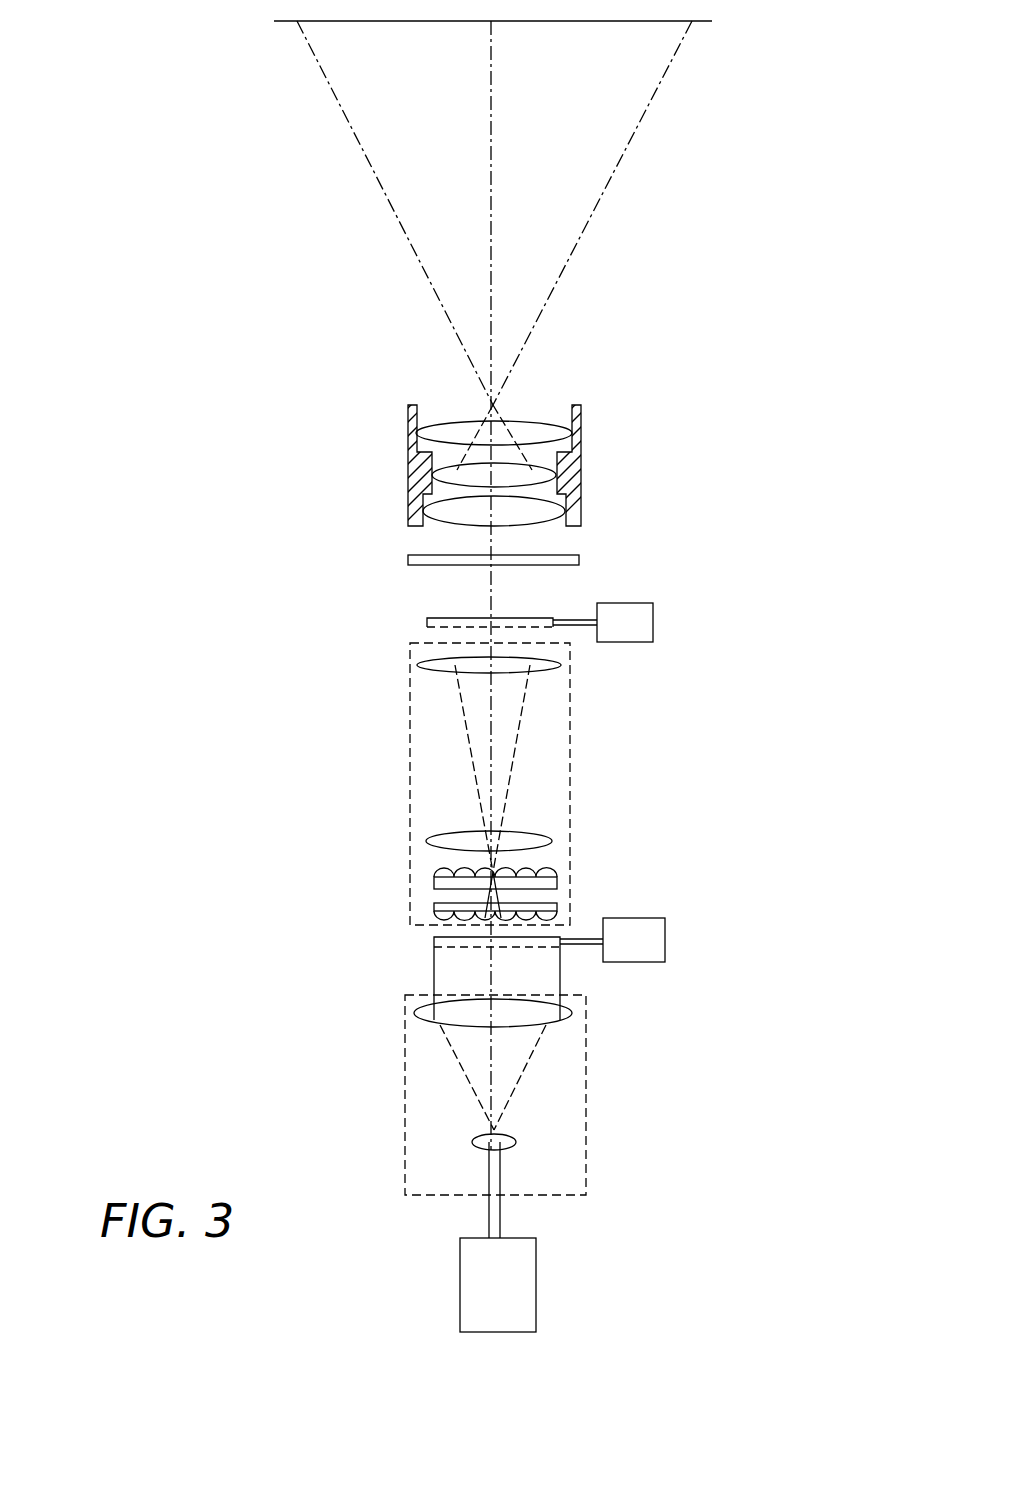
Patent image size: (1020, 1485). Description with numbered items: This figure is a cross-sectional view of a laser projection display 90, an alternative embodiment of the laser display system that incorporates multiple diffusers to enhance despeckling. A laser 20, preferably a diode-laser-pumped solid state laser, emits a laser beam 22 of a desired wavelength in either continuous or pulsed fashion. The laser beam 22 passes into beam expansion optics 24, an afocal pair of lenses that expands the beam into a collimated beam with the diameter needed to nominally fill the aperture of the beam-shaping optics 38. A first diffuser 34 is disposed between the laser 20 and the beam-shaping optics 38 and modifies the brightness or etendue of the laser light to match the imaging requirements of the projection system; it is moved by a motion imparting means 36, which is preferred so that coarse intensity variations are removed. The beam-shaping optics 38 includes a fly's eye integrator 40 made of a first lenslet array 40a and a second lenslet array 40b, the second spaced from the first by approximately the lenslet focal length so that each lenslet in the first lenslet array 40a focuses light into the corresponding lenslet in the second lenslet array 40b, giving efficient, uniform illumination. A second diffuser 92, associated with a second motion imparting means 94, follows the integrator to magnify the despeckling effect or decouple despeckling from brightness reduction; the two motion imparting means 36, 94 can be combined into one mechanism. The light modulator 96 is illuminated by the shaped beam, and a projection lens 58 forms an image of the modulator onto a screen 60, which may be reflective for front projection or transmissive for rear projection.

The laser 20 is at (466, 1303).
The laser beam 22 is at (488, 1208).
The beam expansion optics 24 is at (405, 1116).
The diffuser 34 is at (434, 940).
The motion imparting means 36 is at (630, 962).
The beam-shaping optics 38 is at (410, 728).
The fly's eye integrator 40 is at (471, 871).
The first lenslet array 40a is at (434, 907).
The second lenslet array 40b is at (437, 878).
The projection lens 58 is at (410, 463).
The screen 60 is at (437, 22).
The laser projection display 90 is at (200, 233).
The diffuser 92 is at (427, 623).
The motion imparting means 94 is at (648, 628).
The light modulator 96 is at (408, 560).